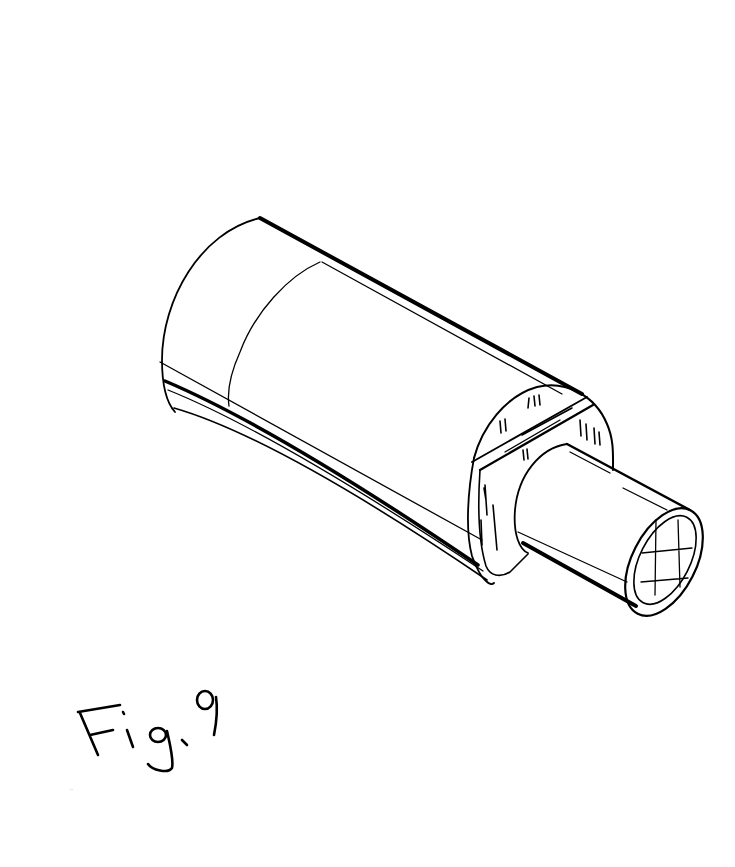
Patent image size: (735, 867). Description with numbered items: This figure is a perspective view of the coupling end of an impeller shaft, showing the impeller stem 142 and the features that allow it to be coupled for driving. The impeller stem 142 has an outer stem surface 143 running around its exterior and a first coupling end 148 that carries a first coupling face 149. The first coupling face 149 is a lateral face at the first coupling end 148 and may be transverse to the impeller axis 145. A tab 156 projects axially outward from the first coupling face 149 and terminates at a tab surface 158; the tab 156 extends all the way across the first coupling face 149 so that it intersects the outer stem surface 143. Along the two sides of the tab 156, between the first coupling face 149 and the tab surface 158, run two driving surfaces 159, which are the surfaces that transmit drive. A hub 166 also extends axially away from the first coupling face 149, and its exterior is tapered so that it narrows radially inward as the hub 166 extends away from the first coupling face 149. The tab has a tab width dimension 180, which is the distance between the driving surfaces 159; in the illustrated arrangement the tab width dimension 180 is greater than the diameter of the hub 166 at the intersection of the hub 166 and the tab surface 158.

The impeller stem 142 is at (378, 272).
The outer stem surface 143 is at (291, 472).
The impeller axis 145 is at (730, 593).
The first coupling end 148 is at (506, 378).
The first coupling face 149 is at (565, 384).
The tab 156 is at (477, 493).
The tab surface 158 is at (470, 565).
The driving surfaces 159 is at (577, 401).
The hub 166 is at (569, 576).
The tab width dimension 180 is at (690, 332).